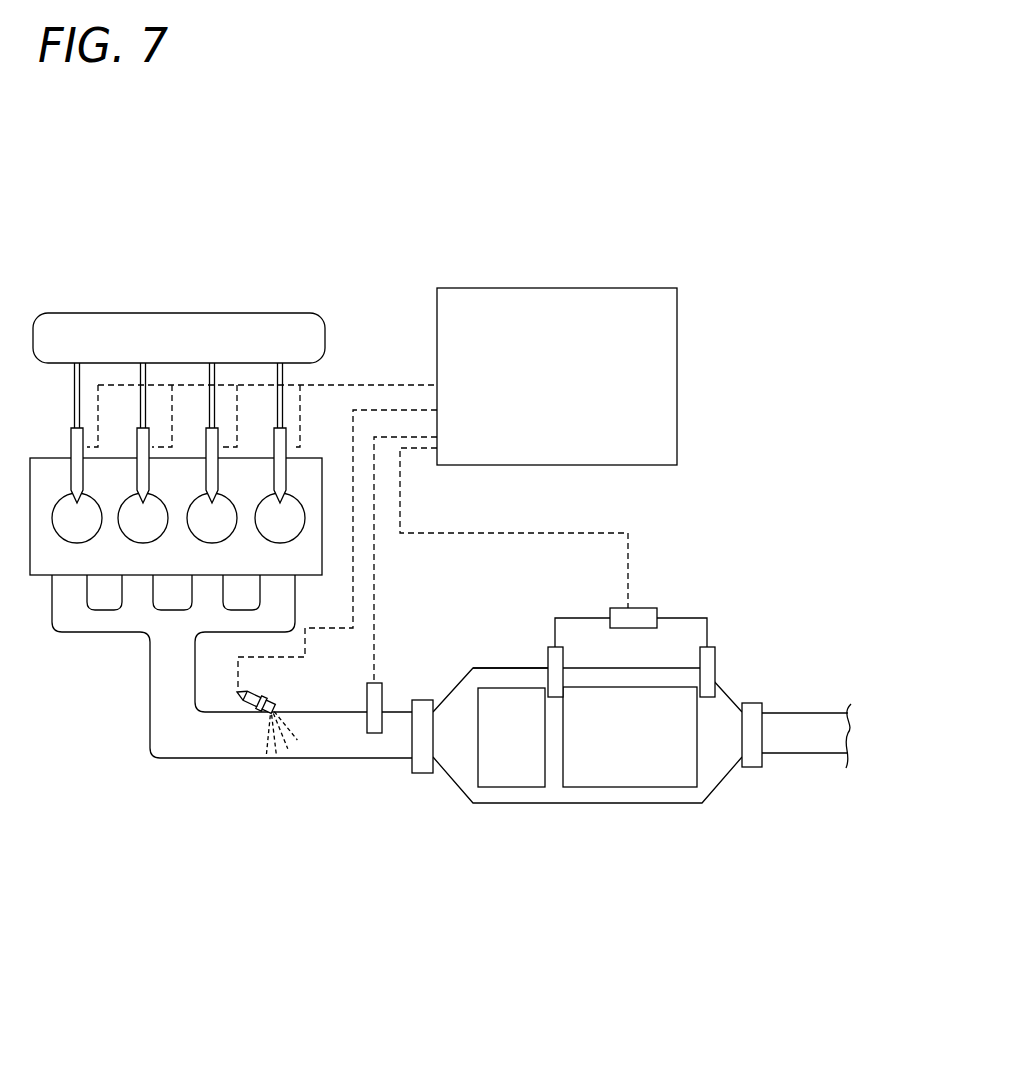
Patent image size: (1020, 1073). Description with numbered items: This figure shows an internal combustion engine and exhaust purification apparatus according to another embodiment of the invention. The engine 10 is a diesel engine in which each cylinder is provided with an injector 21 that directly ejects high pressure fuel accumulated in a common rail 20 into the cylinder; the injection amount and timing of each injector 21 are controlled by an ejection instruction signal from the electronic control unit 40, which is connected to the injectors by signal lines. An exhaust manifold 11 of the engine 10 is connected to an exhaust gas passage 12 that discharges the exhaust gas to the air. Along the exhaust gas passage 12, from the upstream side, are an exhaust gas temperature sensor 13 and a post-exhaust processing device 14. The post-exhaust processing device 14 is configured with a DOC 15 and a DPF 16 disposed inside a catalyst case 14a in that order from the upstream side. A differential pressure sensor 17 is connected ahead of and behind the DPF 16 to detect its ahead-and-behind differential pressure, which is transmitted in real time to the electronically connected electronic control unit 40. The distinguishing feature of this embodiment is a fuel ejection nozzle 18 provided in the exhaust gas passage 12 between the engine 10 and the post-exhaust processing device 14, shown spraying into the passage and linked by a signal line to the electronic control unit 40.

The diesel engine 10 is at (164, 569).
The exhaust manifold 11 is at (298, 593).
The exhaust gas passage 12 is at (258, 760).
The exhaust gas temperature sensor 13 is at (366, 700).
The post-exhaust processing device 14 is at (598, 807).
The catalyst case 14a is at (483, 667).
The DOC 15 is at (499, 749).
The DPF 16 is at (617, 749).
The differential pressure sensor 17 is at (648, 618).
The fuel ejection nozzle 18 is at (255, 688).
The common rail 20 is at (159, 352).
The injector 21 is at (75, 445).
The electronic control unit 40 is at (555, 288).